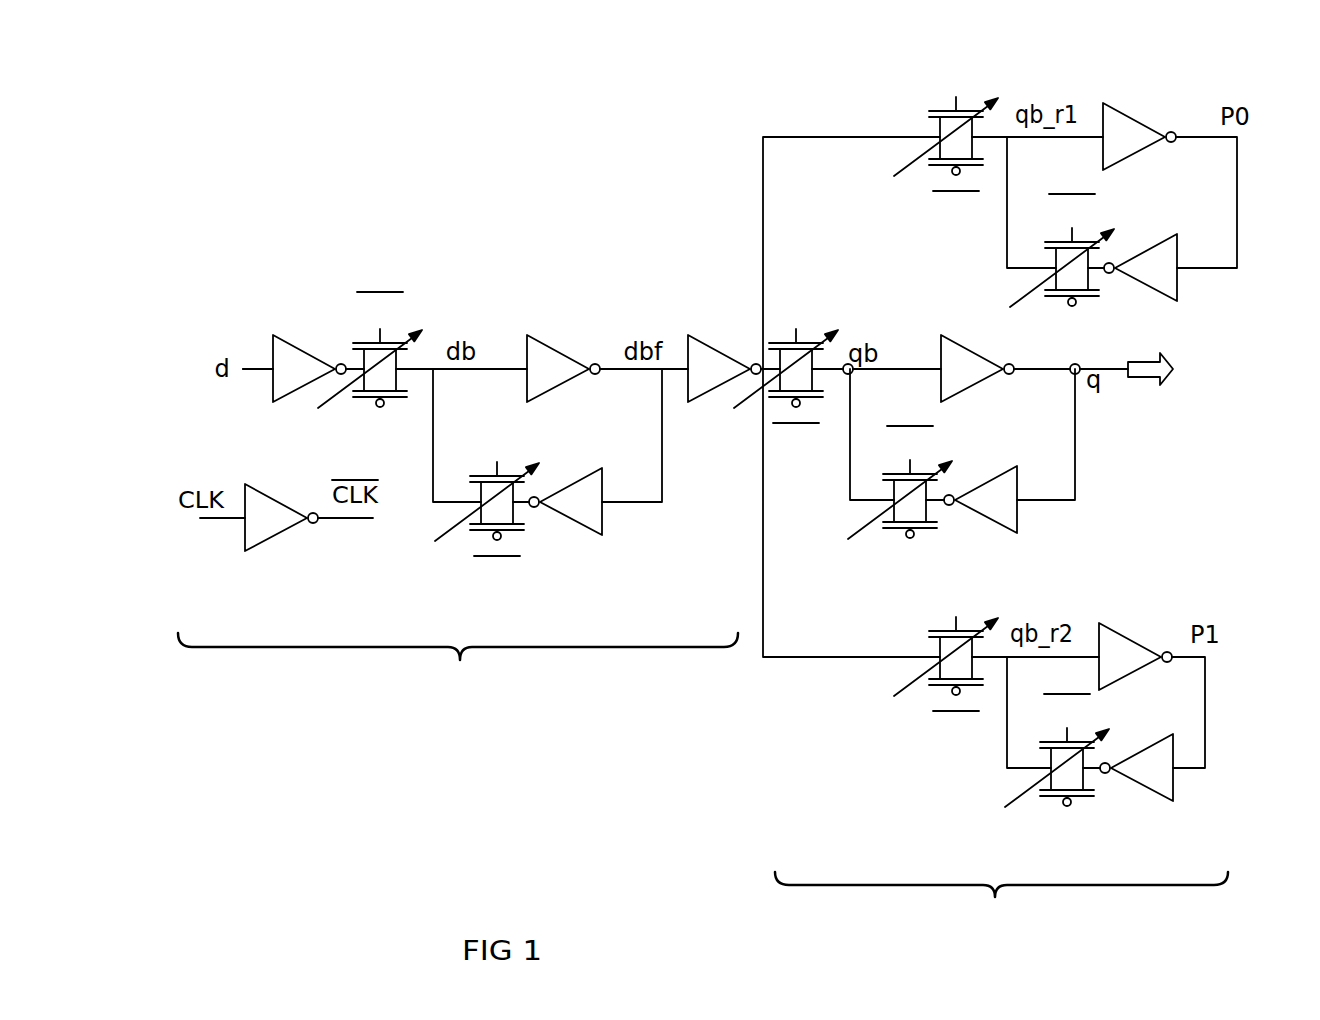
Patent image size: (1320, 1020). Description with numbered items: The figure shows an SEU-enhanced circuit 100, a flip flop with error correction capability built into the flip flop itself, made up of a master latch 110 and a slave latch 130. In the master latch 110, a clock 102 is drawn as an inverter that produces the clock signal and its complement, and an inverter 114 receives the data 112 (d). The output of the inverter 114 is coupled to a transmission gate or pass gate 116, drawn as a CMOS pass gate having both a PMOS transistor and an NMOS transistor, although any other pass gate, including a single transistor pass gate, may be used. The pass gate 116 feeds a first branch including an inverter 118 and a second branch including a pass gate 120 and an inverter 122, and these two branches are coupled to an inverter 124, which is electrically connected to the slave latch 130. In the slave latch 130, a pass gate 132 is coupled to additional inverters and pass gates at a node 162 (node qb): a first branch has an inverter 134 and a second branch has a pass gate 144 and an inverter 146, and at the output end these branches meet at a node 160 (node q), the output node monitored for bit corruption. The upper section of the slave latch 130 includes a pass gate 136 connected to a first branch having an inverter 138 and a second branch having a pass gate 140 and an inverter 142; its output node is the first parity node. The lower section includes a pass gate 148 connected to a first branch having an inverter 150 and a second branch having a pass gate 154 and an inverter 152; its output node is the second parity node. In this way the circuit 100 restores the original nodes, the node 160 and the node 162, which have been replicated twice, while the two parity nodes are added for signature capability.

The SEU-enhanced circuit 100 is at (314, 94).
The clock 102 is at (278, 535).
The master latch 110 is at (458, 661).
The data 112 is at (258, 369).
The inverter 114 is at (300, 340).
The pass gate 116 is at (423, 313).
The inverter 118 is at (555, 342).
The pass gate 120 is at (462, 543).
The inverter 122 is at (588, 533).
The inverter 124 is at (715, 400).
The slave latch 130 is at (1001, 900).
The pass gate 132 is at (835, 308).
The inverter 134 is at (963, 330).
The pass gate 136 is at (993, 80).
The inverter 138 is at (1138, 108).
The pass gate 140 is at (1113, 232).
The inverter 142 is at (1187, 285).
The pass gate 144 is at (947, 450).
The inverter 146 is at (1020, 483).
The pass gate 148 is at (925, 697).
The inverter 150 is at (1137, 627).
The inverter 152 is at (1150, 798).
The pass gate 154 is at (1032, 805).
The node 160 is at (1083, 387).
The node 162 is at (845, 377).